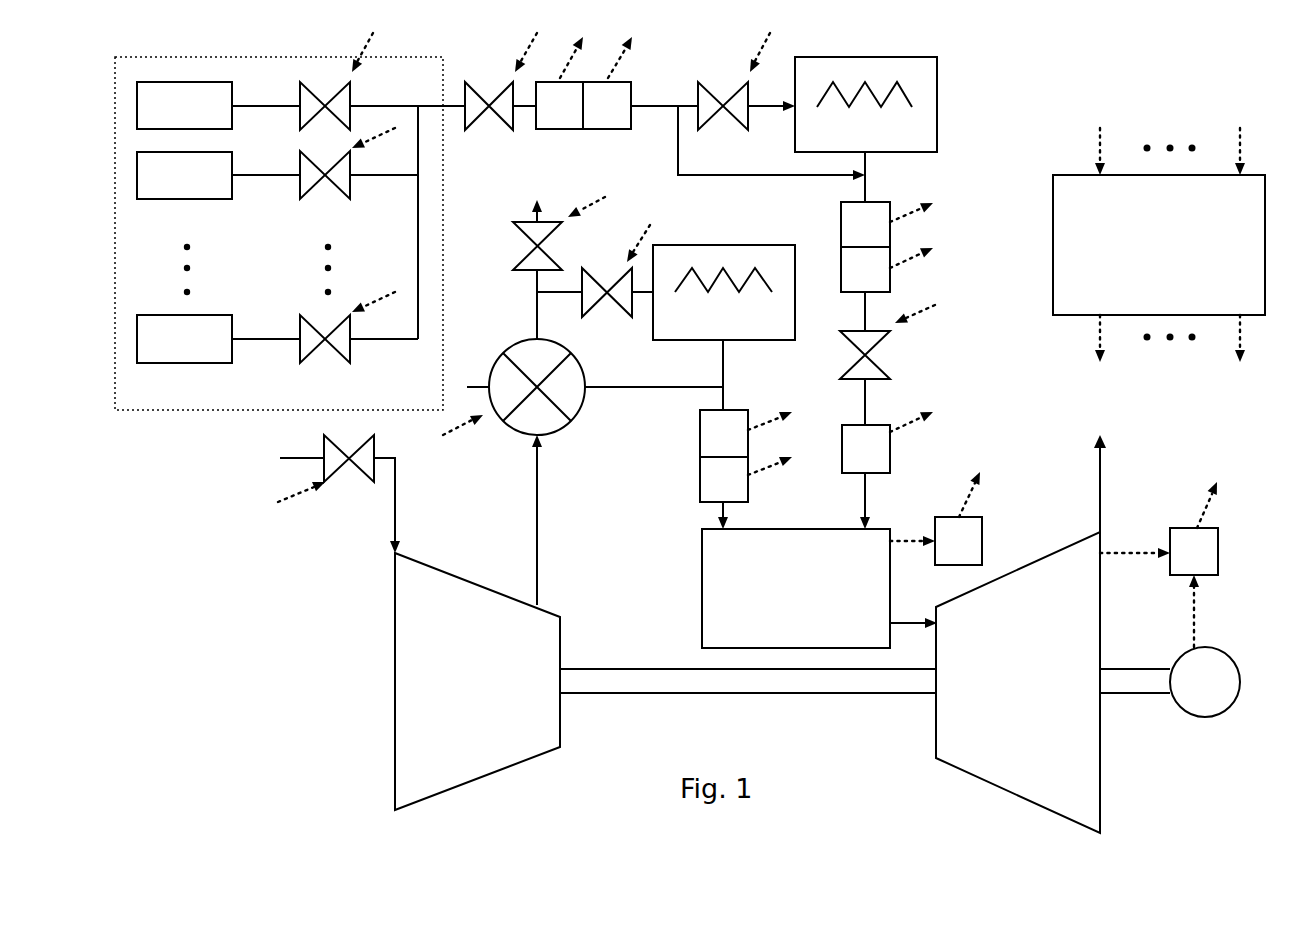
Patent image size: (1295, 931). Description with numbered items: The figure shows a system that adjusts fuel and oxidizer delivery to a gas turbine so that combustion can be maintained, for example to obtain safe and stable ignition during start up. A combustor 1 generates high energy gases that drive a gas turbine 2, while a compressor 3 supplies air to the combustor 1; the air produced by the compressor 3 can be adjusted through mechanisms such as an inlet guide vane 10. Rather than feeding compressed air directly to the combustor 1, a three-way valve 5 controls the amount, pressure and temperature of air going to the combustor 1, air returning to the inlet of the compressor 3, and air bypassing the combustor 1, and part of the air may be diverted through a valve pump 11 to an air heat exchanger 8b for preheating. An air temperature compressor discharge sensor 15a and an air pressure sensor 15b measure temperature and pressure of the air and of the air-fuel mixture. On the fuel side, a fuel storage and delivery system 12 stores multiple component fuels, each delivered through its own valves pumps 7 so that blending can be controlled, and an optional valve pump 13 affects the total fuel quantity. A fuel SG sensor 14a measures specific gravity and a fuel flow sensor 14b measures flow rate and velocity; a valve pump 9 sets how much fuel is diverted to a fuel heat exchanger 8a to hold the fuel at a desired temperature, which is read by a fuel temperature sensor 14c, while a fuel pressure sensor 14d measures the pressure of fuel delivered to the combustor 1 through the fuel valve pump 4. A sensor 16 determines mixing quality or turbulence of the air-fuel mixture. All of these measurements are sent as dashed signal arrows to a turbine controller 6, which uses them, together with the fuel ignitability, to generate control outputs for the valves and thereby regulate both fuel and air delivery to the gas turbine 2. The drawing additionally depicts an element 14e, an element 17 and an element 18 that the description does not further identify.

The combustor 1 is at (819, 588).
The gas turbine 2 is at (1088, 634).
The compressor 3 is at (666, 681).
The fuel valve pump 4 is at (887, 365).
The three-way valve 5 is at (583, 472).
The turbine controller 6 is at (1157, 230).
The valves pumps 7 is at (347, 198).
The fuel heat exchanger 8a is at (866, 129).
The air heat exchanger 8b is at (724, 327).
The valve pump 9 is at (746, 81).
The inlet guide vane 10 is at (339, 494).
The valve pump 11 is at (595, 271).
The fuel storage and delivery system 12 is at (290, 233).
The valve pump 13 is at (501, 81).
The fuel SG sensor 14a is at (559, 83).
The fuel flow sensor 14b is at (607, 83).
The fuel temperature sensor 14c is at (887, 224).
The fuel pressure sensor 14d is at (887, 269).
The sensor 14e is at (887, 470).
The air temperature compressor discharge sensor 15a is at (746, 433).
The air pressure sensor 15b is at (746, 493).
The sensor 16 is at (936, 518).
The turbine/load sensor 17 is at (1159, 564).
The vent valve 18 is at (548, 268).